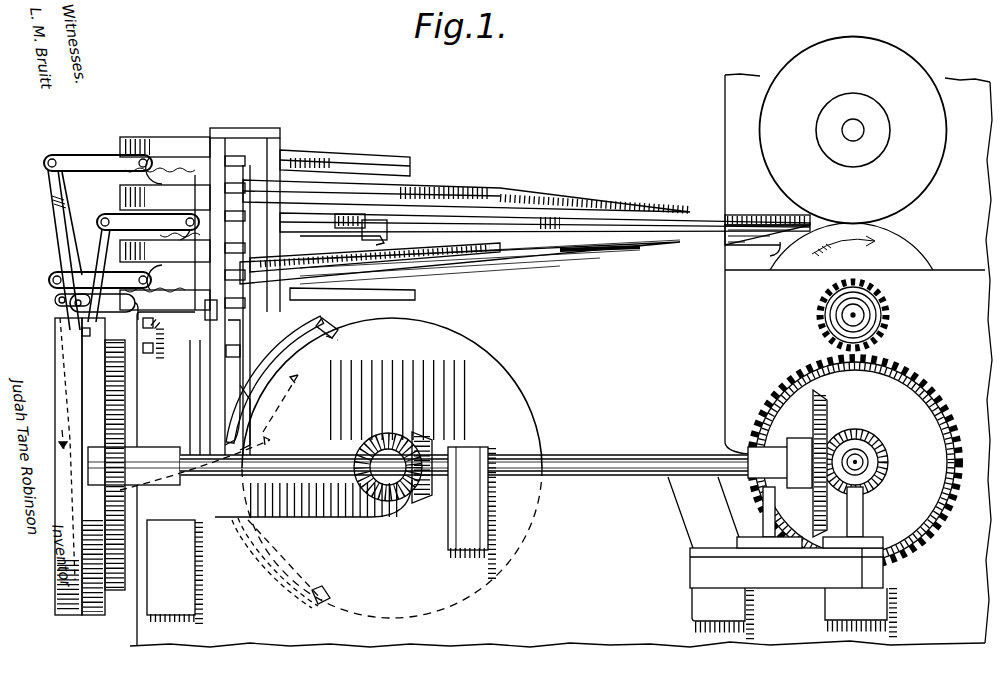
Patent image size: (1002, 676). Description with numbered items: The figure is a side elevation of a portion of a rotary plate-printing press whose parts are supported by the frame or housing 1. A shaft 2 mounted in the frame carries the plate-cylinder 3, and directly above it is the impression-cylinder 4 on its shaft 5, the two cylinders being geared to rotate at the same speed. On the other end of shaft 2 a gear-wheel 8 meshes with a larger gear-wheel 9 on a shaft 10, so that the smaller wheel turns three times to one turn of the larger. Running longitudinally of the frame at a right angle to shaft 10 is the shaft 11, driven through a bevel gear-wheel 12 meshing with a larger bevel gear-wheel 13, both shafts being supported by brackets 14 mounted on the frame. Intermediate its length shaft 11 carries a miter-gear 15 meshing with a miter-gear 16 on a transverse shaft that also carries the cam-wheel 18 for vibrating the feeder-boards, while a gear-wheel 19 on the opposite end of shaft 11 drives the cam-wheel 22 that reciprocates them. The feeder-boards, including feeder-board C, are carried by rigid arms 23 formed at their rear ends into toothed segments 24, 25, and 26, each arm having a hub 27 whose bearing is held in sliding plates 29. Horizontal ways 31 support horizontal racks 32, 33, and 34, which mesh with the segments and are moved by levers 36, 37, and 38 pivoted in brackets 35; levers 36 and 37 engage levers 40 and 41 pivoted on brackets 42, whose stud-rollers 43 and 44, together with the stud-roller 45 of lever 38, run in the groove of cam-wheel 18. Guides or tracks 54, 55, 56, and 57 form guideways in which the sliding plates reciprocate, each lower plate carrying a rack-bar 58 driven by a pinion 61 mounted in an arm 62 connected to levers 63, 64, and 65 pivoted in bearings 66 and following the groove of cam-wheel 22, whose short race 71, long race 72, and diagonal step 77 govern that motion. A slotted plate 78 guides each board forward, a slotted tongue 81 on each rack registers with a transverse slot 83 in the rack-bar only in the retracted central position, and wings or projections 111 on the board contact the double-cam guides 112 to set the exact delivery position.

The frame or housing 1 is at (561, 360).
The shaft 2 is at (838, 313).
The plate-cylinder 3 is at (891, 253).
The impression-cylinder 4 is at (853, 130).
The shaft 5 is at (843, 128).
The gear-wheel 8 is at (883, 330).
The gear-wheel 9 is at (855, 462).
The shaft 10 is at (868, 462).
The shaft 11 is at (450, 461).
The bevel gear-wheel 12 is at (880, 478).
The bevel gear-wheel 13 is at (810, 420).
The brackets 14 is at (770, 515).
The miter-gear 15 is at (440, 440).
The miter-gear 16 is at (390, 432).
The cam-wheel 18 is at (378, 468).
The gear-wheel 19 is at (100, 398).
The cam-wheel 22 is at (60, 370).
The rigid arms 23 is at (466, 193).
The toothed segment 24 is at (292, 168).
The toothed segment 25 is at (334, 224).
The toothed segment 26 is at (464, 262).
The hub 27 is at (372, 237).
The sliding plates 29 is at (284, 166).
The horizontal ways 31 is at (228, 158).
The horizontal rack 32 is at (212, 165).
The horizontal rack 33 is at (232, 220).
The horizontal rack 34 is at (225, 262).
The brackets 35 is at (200, 356).
The lever 36 is at (280, 330).
The lever 37 is at (200, 316).
The lever 38 is at (238, 410).
The lever 40 is at (312, 320).
The lever 41 is at (272, 576).
The brackets 42 is at (272, 556).
The stud-roller 43 is at (350, 342).
The stud-roller 44 is at (332, 582).
The stud-roller 45 is at (205, 463).
The guide or track 54 is at (350, 146).
The guide or track 55 is at (165, 197).
The guide or track 56 is at (165, 252).
The guide or track 57 is at (403, 296).
The rack-bar 58 is at (155, 238).
The pinion 61 is at (165, 223).
The arms 62 is at (75, 160).
The lever 63 is at (60, 212).
The lever 64 is at (100, 256).
The lever 65 is at (56, 302).
The bearings 66 is at (128, 520).
The short straight race 71 is at (70, 333).
The long straight race 72 is at (82, 450).
The diagonal step 77 is at (72, 350).
The plate 78 is at (355, 160).
The tongue or projection 81 is at (222, 307).
The transverse slot 83 is at (334, 232).
The wings or projections 111 is at (612, 210).
The guides 112 is at (756, 256).
The feeder-board C is at (460, 263).